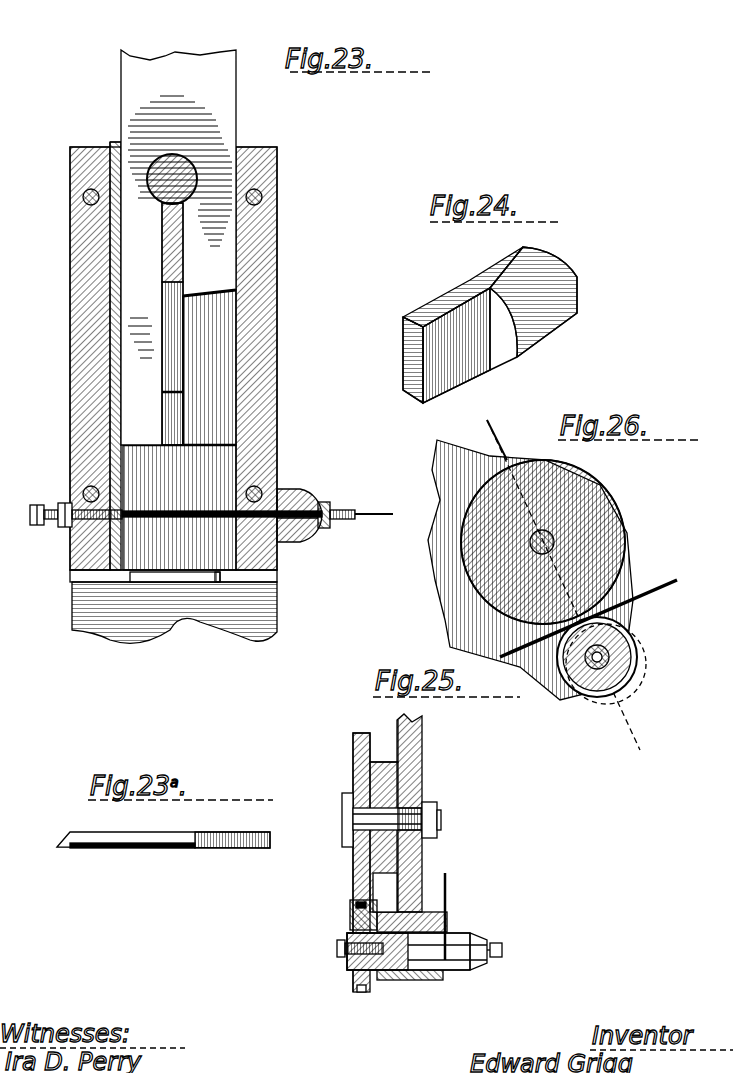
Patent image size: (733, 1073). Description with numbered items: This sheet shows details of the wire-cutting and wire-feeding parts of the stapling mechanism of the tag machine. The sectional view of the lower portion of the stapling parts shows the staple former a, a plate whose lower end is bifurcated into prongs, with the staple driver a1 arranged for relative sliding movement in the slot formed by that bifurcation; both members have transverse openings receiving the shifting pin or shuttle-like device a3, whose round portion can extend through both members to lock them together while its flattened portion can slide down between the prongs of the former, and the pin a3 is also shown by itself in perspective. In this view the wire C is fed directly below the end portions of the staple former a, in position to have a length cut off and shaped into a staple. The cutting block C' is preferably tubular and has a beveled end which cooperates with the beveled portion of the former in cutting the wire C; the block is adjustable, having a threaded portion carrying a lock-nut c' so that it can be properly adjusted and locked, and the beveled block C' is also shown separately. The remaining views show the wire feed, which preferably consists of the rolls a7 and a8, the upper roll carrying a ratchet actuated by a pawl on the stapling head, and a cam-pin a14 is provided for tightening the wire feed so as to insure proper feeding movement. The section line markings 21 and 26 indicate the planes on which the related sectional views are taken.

In FIG. 23, the staple former a is at (136, 352).
In FIG. 23, the staple driver a1 is at (175, 308).
In FIG. 23, the shifting pin or shuttle-like device a3 is at (185, 163).
In FIG. 24, the shifting pin or shuttle-like device a3 is at (487, 272).
In FIG. 26, the feed roll a7 is at (612, 540).
In FIG. 25, the feed roll a7 is at (367, 782).
In FIG. 26, the feed roll a8 is at (620, 645).
In FIG. 25, the feed roll a8 is at (360, 917).
In FIG. 26, the cam-pin a14 is at (587, 670).
In FIG. 25, the cam-pin a14 is at (427, 947).
In FIG. 23, the wire C is at (211, 505).
In FIG. 26, the wire C is at (599, 600).
In FIG. 25, the wire C is at (341, 885).
In FIG. 23, the cutting block C' is at (222, 492).
In FIG. 23A, the cutting block C' is at (163, 856).
In FIG. 23, the lock-nut c' is at (331, 501).
In FIG. 23, the section line 21 is at (172, 445).
In FIG. 25, the section line 26 is at (361, 735).